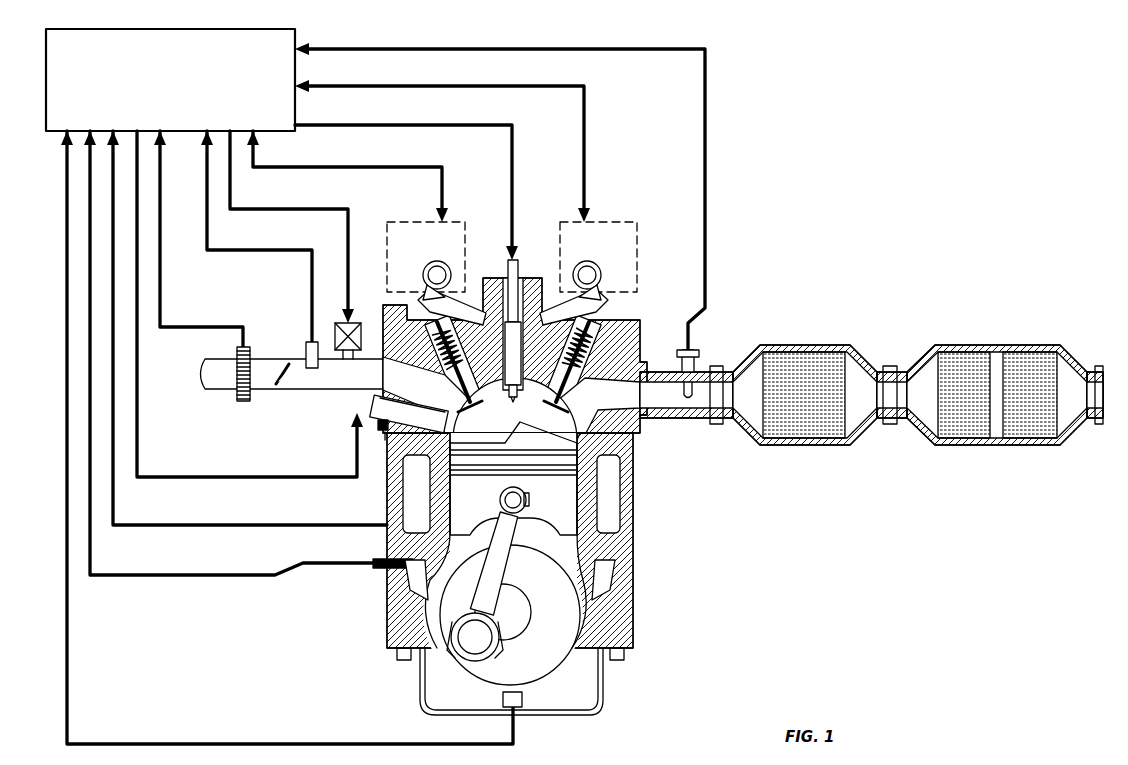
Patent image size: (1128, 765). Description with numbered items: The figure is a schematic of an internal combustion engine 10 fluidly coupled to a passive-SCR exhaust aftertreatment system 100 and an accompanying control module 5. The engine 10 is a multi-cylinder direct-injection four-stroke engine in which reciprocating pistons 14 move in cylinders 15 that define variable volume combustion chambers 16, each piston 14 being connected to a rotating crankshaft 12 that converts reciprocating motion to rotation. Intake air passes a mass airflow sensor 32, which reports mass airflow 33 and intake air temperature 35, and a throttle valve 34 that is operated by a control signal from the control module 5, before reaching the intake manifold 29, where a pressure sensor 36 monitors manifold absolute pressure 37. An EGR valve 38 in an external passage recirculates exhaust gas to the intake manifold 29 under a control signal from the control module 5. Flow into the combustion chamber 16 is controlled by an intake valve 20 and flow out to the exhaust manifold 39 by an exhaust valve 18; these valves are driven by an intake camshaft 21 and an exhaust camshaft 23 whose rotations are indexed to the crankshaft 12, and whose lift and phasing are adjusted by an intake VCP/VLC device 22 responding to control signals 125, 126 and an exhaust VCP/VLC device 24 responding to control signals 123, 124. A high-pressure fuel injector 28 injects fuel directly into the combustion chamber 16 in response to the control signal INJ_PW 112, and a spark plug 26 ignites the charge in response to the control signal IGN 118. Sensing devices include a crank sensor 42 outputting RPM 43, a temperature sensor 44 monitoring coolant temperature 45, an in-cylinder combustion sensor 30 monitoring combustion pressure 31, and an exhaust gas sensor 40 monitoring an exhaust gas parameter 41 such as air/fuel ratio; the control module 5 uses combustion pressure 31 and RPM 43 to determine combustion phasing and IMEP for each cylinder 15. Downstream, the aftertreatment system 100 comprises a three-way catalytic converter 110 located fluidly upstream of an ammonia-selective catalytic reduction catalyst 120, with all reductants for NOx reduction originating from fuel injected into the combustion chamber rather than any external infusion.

The control module 5 is at (161, 94).
The internal combustion engine 10 is at (642, 545).
The crankshaft 12 is at (558, 662).
The piston 14 is at (540, 506).
The cylinder 15 is at (586, 455).
The combustion chamber 16 is at (473, 436).
The exhaust valve 18 is at (588, 397).
The intake valve 20 is at (426, 380).
The intake camshaft 21 is at (447, 288).
The intake VCP/VLC device 22 is at (398, 249).
The exhaust camshaft 23 is at (601, 284).
The exhaust VCP/VLC device 24 is at (605, 249).
The spark plug 26 is at (520, 278).
The fuel injector 28 is at (372, 400).
The intake manifold 29 is at (368, 364).
The in-cylinder combustion sensor 30 is at (382, 440).
The combustion pressure 31 is at (237, 519).
The mass airflow sensor 32 is at (237, 399).
The mass airflow 33 is at (198, 239).
The throttle valve 34 is at (282, 382).
The intake air temperature 35 is at (172, 322).
The pressure sensor 36 is at (312, 368).
The manifold absolute pressure 37 is at (285, 244).
The EGR valve 38 is at (348, 360).
The exhaust manifold 39 is at (653, 372).
The exhaust gas sensor 40 is at (697, 362).
The exhaust gas parameter 41 is at (657, 42).
The crank sensor 42 is at (500, 700).
The RPM 43 is at (245, 737).
The temperature sensor 44 is at (315, 202).
The coolant temperature 45 is at (193, 569).
The passive-SCR exhaust aftertreatment system 100 is at (918, 364).
The three-way catalytic converter 110 is at (800, 430).
The control signal INJ_PW 112 is at (254, 471).
The control signal IGN 118 is at (481, 119).
The ammonia-selective catalytic reduction catalyst 120 is at (996, 365).
The control signal 123 is at (442, 141).
The control signal 124 is at (522, 79).
The control signal 125 is at (347, 176).
The control signal 126 is at (368, 161).